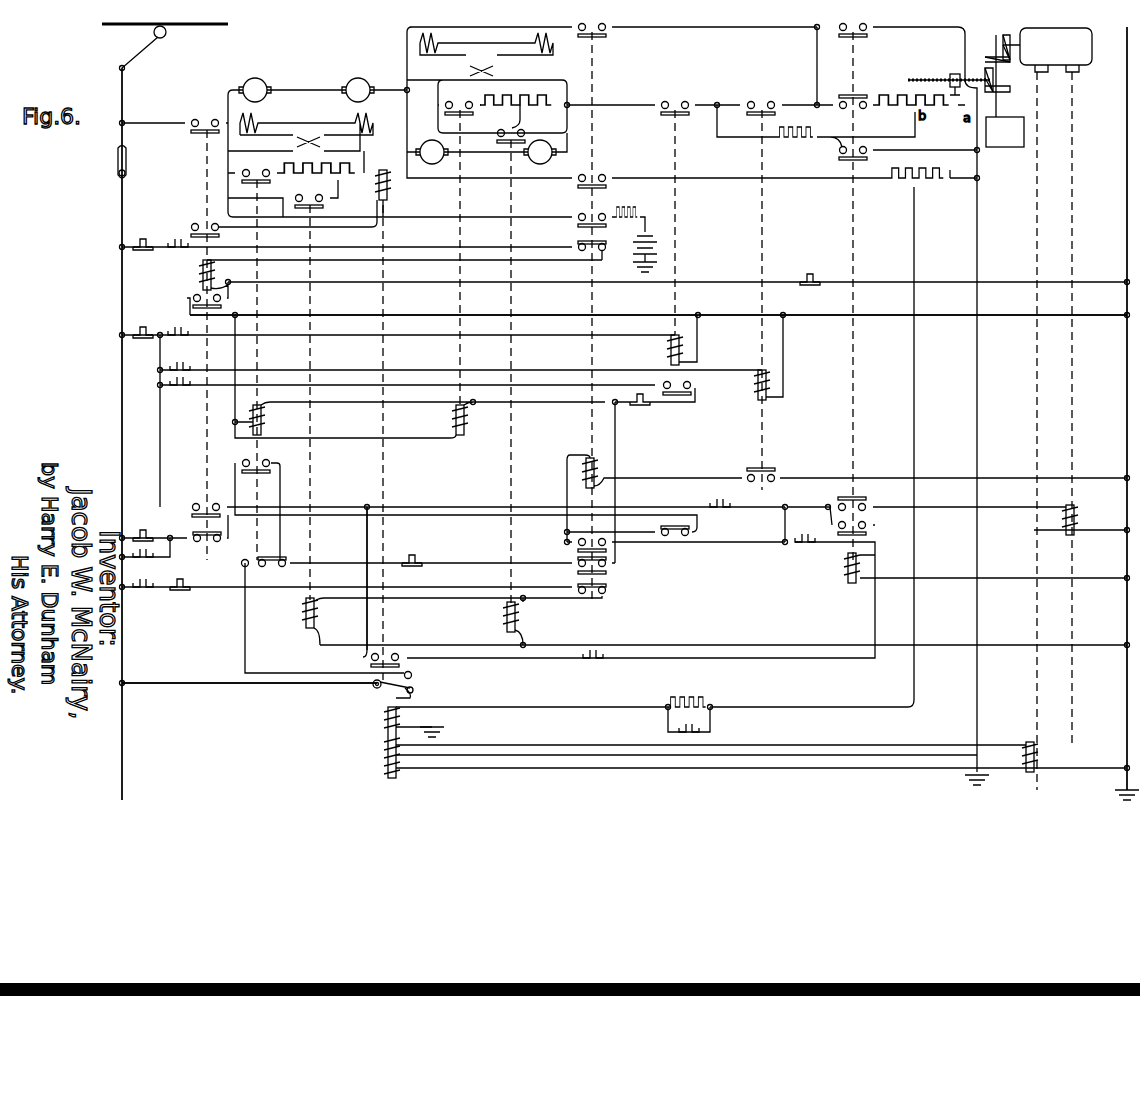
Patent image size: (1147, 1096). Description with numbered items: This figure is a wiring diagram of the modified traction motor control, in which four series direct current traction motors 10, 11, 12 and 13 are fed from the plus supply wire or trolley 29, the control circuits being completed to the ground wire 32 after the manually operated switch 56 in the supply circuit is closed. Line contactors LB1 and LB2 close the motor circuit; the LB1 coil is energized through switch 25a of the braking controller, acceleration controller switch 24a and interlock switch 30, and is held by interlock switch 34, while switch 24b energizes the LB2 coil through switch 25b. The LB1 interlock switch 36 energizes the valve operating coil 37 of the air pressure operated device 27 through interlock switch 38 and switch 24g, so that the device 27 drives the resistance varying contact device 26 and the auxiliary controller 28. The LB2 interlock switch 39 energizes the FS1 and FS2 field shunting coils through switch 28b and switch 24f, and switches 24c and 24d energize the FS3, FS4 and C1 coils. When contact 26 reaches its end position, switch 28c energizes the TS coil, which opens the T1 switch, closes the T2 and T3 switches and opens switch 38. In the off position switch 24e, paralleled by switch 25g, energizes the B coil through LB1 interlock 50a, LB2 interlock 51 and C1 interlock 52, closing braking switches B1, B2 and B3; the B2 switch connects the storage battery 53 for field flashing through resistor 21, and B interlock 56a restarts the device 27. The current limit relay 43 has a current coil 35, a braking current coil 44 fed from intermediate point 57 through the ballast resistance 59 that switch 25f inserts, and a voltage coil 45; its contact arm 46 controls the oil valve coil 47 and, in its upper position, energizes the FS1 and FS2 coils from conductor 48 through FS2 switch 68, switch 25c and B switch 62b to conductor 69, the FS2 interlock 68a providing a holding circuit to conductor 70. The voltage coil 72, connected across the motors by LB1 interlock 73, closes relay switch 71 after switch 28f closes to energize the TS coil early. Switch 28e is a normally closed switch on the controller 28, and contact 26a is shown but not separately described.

The traction motor 10 is at (255, 90).
The traction motor 11 is at (358, 90).
The traction motor 12 is at (432, 152).
The traction motor 13 is at (540, 152).
The motor controller resistor 21 is at (930, 190).
The resistance varying contact device 26 is at (955, 74).
The air pressure operated fluid device 27 is at (1056, 46).
The auxiliary controller 28 is at (1005, 132).
The plus supply wire or trolley 29 is at (122, 278).
The interlock switch 30 is at (580, 244).
The ground wire 32 is at (1125, 181).
The LB1 interlock switch 34 is at (222, 304).
The current coil 35 is at (386, 770).
The LB1 interlock switch 36 is at (200, 503).
The valve operating coil 37 is at (1078, 520).
The TS interlock switch 38 is at (864, 504).
The LB2 interlock switch 39 is at (695, 393).
The current limit relay 43 is at (437, 722).
The braking current coil 44 is at (400, 710).
The voltage coil 45 is at (386, 745).
The contact arm 46 is at (374, 690).
The oil valve coil 47 is at (1040, 756).
The conductor 48 is at (222, 690).
The LB2 interlock switch 51 is at (665, 530).
The C1 interlock switch 52 is at (767, 470).
The storage battery 53 is at (640, 256).
The manually operated switch 56 is at (127, 158).
The intermediate point 57 is at (915, 188).
The ballast resistance 59 is at (690, 702).
The conductor 69 is at (440, 316).
The conductor 70 is at (360, 566).
The relay switch 71 is at (372, 661).
The coil 72 is at (391, 186).
The LB1 interlock switch 73 is at (195, 227).
The acceleration controller switch 24a is at (178, 254).
The acceleration controller switch 24b is at (174, 322).
The acceleration controller switch 24c is at (150, 583).
The acceleration controller switch 24d is at (182, 362).
The acceleration controller switch 24e is at (170, 556).
The acceleration controller switch 24f is at (180, 393).
The acceleration controller switch 24g is at (725, 512).
The braking controller switch 25a is at (147, 234).
The braking controller switch 25b is at (142, 322).
The braking controller switch 25c is at (420, 560).
The braking controller switch 25f is at (710, 729).
The braking controller switch 25g is at (149, 526).
The contact 26a is at (180, 593).
The auxiliary controller switch 28b is at (640, 406).
The auxiliary controller switch 28c is at (808, 536).
The auxiliary controller switch 28e is at (810, 274).
The auxiliary controller switch 28f is at (593, 665).
The LB1 interlock switch 50a is at (229, 570).
The B interlock switch 56a is at (580, 546).
The B switch 62b is at (578, 573).
The FS2 switch 68 is at (264, 568).
The FS2 interlock switch 68a is at (268, 462).
The line contactor LB1 is at (192, 194).
The line contactor LB2 is at (655, 223).
The field shunting switch FS1 is at (498, 259).
The field shunting switch FS2 is at (297, 293).
The field shunting switch FS3 is at (507, 381).
The field shunting switch FS4 is at (324, 204).
The braking switch B1 is at (606, 37).
The braking switch B2 is at (582, 215).
The braking switch B3 is at (598, 175).
The B coil B is at (588, 464).
The contactor C1 is at (773, 240).
The transition switch T1 is at (860, 98).
The transition switch T2 is at (867, 36).
The transition switch T3 is at (843, 158).
The transition coil TS is at (835, 568).